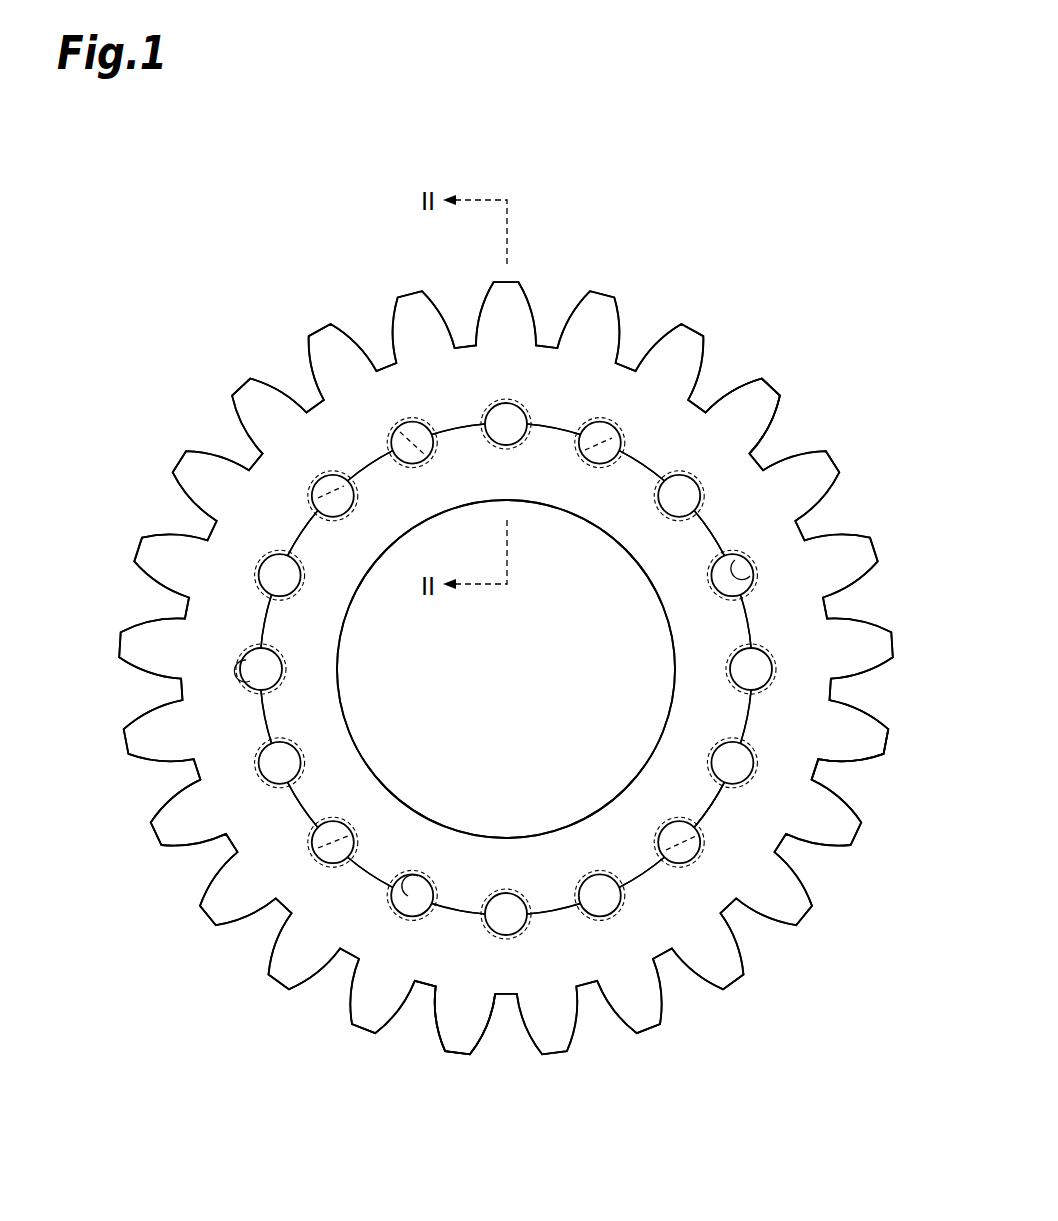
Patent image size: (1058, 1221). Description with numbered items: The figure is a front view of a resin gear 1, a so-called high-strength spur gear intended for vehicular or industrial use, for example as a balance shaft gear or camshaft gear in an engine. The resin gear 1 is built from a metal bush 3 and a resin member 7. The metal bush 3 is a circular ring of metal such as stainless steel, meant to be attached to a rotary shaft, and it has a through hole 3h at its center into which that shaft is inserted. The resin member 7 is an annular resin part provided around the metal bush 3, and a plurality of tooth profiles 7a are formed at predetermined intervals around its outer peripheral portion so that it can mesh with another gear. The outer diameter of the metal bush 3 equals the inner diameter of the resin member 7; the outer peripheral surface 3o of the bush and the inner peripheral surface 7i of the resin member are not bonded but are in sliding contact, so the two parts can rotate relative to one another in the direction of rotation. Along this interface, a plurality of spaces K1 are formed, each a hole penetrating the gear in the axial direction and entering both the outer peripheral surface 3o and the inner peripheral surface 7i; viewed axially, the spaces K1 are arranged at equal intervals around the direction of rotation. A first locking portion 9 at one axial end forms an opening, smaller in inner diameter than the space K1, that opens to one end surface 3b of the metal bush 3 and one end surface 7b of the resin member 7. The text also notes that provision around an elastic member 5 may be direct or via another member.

The resin gear 1 is at (874, 248).
The metal bush 3 is at (692, 650).
The through hole 3h is at (606, 733).
The outer peripheral surface 3o is at (553, 912).
The one end surface 3b is at (693, 795).
The elastic member 5 is at (600, 433).
The resin member 7 is at (545, 372).
The tooth profile 7a is at (866, 765).
The one end surface 7b is at (742, 480).
The inner peripheral surface 7i is at (447, 895).
The first locking portion 9 is at (760, 572).
The space K1 is at (396, 440).